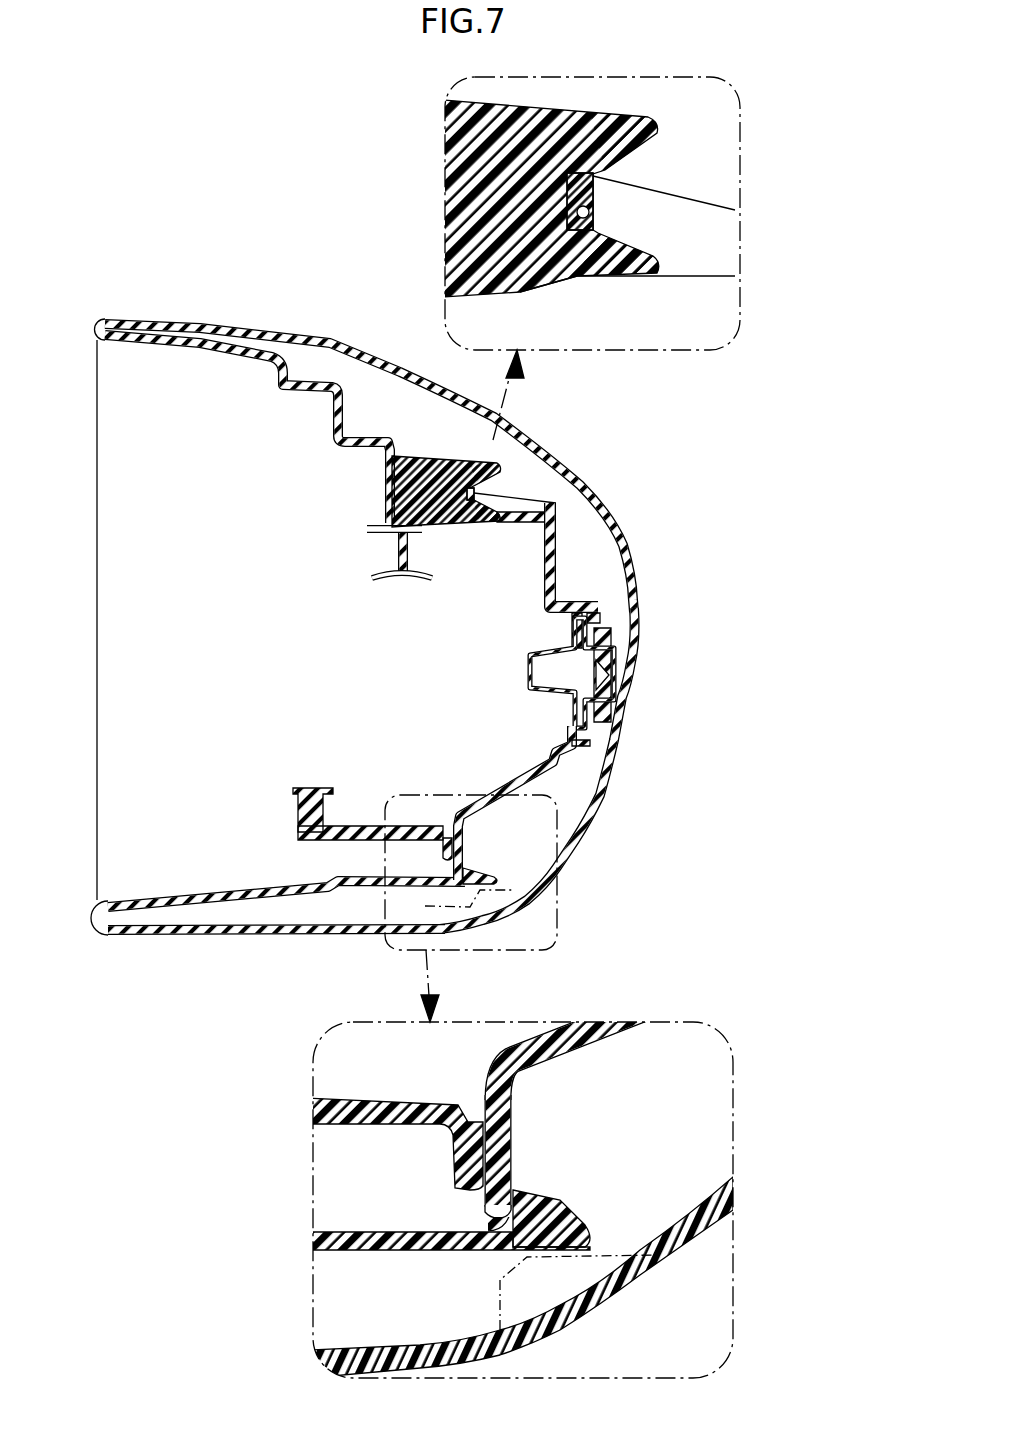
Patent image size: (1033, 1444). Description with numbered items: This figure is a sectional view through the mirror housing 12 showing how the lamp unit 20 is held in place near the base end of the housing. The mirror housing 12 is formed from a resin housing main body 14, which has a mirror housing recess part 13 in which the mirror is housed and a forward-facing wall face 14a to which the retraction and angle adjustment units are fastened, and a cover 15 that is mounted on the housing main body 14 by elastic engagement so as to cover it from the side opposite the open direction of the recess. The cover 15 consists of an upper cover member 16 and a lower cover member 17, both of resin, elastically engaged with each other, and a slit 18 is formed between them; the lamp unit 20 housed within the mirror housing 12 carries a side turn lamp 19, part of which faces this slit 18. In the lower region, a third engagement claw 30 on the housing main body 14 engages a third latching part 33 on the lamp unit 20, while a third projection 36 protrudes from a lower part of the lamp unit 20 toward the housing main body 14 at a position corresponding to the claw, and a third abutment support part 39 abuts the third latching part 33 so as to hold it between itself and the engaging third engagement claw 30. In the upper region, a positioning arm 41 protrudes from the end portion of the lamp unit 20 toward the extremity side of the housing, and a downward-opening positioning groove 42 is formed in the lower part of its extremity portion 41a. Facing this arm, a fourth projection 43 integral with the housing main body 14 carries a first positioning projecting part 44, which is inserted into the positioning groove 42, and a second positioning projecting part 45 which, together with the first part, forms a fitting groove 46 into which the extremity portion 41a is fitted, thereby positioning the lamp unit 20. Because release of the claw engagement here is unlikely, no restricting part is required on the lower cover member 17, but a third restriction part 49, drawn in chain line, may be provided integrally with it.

The mirror housing 12 is at (177, 938).
The mirror housing recess part 13 is at (140, 343).
The housing main body 14 is at (215, 905).
The wall face 14a is at (418, 567).
The cover 15 is at (412, 851).
The upper cover member 16 is at (597, 490).
The lower cover member 17 is at (602, 800).
The slit 18 is at (616, 658).
The side turn lamp 19 is at (611, 686).
The lamp unit 20 is at (527, 683).
The third engagement claw 30 is at (475, 875).
The third latching part 33 is at (465, 845).
The third projection 36 is at (520, 778).
The third abutment support part 39 is at (510, 1138).
The positioning arm 41 is at (542, 500).
The extremity portion 41a is at (469, 490).
The positioning groove 42 is at (580, 234).
The fourth projection 43 is at (420, 456).
The first positioning projecting part 44 is at (558, 520).
The second positioning projecting part 45 is at (498, 468).
The fitting groove 46 is at (478, 494).
The third restriction part 49 is at (500, 1303).